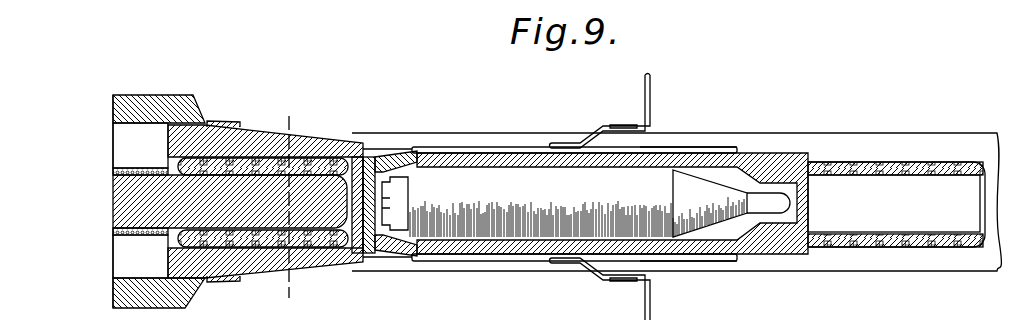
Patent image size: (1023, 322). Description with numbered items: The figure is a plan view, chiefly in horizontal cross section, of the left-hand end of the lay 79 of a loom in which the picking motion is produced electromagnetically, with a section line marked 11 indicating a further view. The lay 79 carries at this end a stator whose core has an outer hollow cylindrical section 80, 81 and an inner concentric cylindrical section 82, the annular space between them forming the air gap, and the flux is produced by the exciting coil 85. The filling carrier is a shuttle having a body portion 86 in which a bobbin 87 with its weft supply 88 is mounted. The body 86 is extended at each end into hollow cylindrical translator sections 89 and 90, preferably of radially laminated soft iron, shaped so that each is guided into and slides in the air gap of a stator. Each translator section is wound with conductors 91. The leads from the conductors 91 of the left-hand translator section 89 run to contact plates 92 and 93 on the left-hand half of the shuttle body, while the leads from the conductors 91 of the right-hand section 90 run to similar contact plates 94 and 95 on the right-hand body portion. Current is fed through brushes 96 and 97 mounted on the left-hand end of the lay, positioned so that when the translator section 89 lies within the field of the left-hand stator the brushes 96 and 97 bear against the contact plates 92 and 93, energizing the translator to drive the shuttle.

The lay 79 is at (898, 263).
The outer hollow cylindrical section 80 is at (313, 260).
The outer hollow cylindrical section 81 is at (190, 290).
The inner concentric cylindrical section 82 is at (327, 183).
The exciting coil 85 is at (148, 133).
The body portion 86 is at (510, 247).
The bobbin 87 is at (768, 198).
The weft supply 88 is at (688, 182).
The translator section 89 is at (305, 165).
The translator section 90 is at (890, 158).
The conductors 91 is at (207, 167).
The contact plate 92 is at (497, 150).
The contact plate 93 is at (473, 257).
The contact plate 94 is at (660, 150).
The contact plate 95 is at (670, 257).
The brush 96 is at (570, 148).
The brush 97 is at (567, 260).
The section line 11 is at (299, 206).